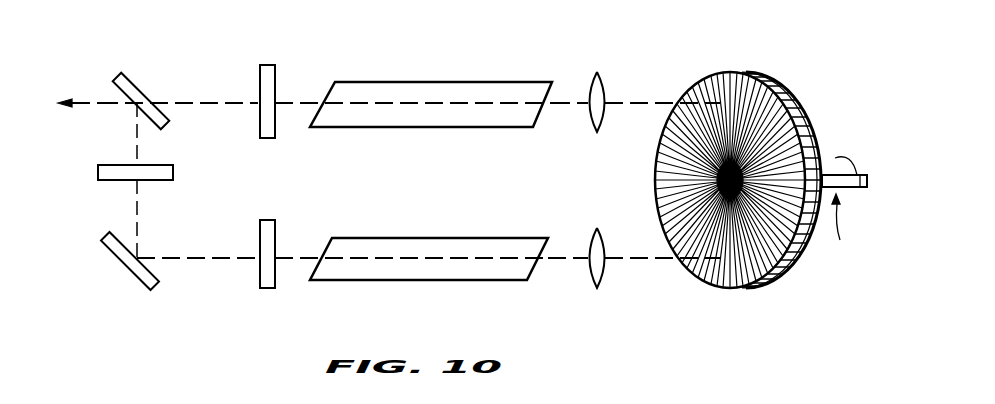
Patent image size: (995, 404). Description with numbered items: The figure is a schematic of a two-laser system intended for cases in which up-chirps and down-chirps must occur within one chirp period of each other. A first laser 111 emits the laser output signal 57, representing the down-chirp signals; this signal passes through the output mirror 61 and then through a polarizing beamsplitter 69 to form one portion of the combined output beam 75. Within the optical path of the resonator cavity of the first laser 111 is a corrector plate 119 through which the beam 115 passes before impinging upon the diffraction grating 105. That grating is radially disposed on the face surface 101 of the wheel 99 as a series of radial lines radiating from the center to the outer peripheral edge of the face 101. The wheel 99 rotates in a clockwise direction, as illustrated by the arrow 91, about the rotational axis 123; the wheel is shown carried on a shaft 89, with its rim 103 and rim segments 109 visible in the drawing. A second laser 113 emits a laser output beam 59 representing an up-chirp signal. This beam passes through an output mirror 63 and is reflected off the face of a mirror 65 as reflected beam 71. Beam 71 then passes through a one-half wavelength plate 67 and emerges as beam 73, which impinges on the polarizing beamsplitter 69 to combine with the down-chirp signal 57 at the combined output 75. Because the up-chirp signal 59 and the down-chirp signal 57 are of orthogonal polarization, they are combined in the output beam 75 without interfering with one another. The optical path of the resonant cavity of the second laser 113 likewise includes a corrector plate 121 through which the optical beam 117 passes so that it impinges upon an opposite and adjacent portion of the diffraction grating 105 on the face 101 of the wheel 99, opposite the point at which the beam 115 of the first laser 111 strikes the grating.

The laser output signal 57 is at (217, 102).
The laser output beam 59 is at (222, 260).
The output mirror 61 is at (275, 80).
The output mirror 63 is at (273, 287).
The mirror 65 is at (133, 277).
The one-half wavelength plate 67 is at (108, 165).
The polarizing beamsplitter 69 is at (143, 93).
The reflected beam 71 is at (135, 202).
The beam 73 is at (137, 133).
The combined output beam 75 is at (93, 102).
The shaft 89 is at (860, 177).
The arrow 91 is at (844, 209).
The wheel 99 is at (726, 176).
The face surface 101 is at (655, 180).
The wheel rim 103 is at (810, 118).
The diffraction grating 105 is at (739, 253).
The rim segments 109 is at (705, 292).
The first laser 111 is at (437, 56).
The second laser 113 is at (422, 217).
The beam 115 is at (563, 102).
The optical beam 117 is at (547, 262).
The corrector plate 119 is at (607, 80).
The corrector plate 121 is at (604, 288).
The rotational axis 123 is at (660, 153).